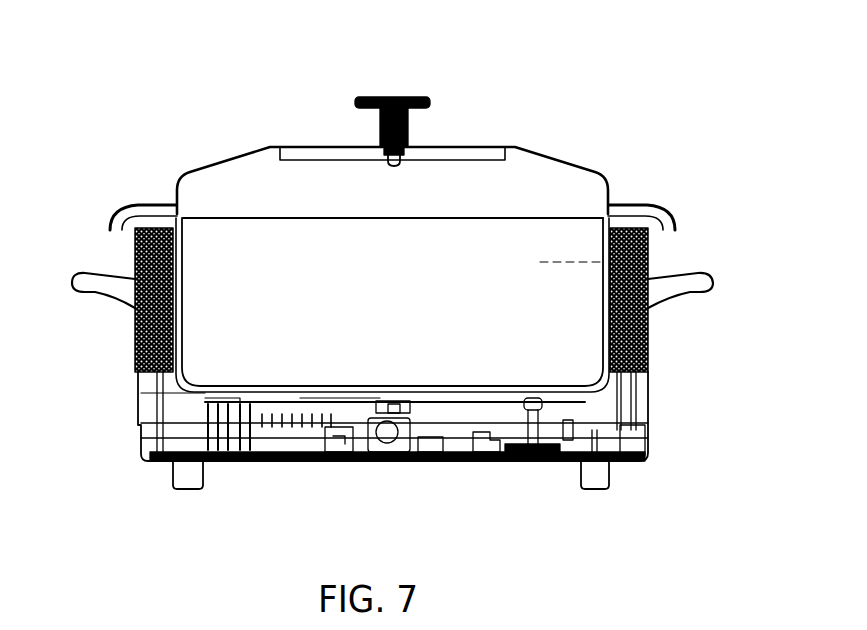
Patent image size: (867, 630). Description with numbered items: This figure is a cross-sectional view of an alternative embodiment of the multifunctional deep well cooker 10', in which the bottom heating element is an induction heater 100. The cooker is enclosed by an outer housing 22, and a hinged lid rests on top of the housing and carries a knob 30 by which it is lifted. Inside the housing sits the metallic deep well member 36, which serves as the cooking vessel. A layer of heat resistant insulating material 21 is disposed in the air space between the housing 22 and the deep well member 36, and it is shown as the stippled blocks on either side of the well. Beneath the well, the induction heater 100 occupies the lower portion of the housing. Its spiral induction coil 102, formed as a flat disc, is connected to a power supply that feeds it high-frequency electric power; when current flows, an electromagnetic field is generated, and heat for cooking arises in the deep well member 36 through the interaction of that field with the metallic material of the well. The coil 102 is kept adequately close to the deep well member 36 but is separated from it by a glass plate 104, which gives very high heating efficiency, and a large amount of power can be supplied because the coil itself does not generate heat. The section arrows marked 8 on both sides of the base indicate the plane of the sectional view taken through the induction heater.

The multifunctional deep well cooker (alternative embodiment) 10' is at (392, 117).
The knob 30 is at (355, 103).
The deep well member 36 is at (184, 297).
The heat resistant insulating material 21 is at (650, 329).
The outer housing 22 is at (650, 395).
The glass plate 104 is at (297, 391).
The spiral induction coil 102 is at (453, 410).
The induction heater 100 is at (284, 470).
The section line 8- 8 is at (93, 421).